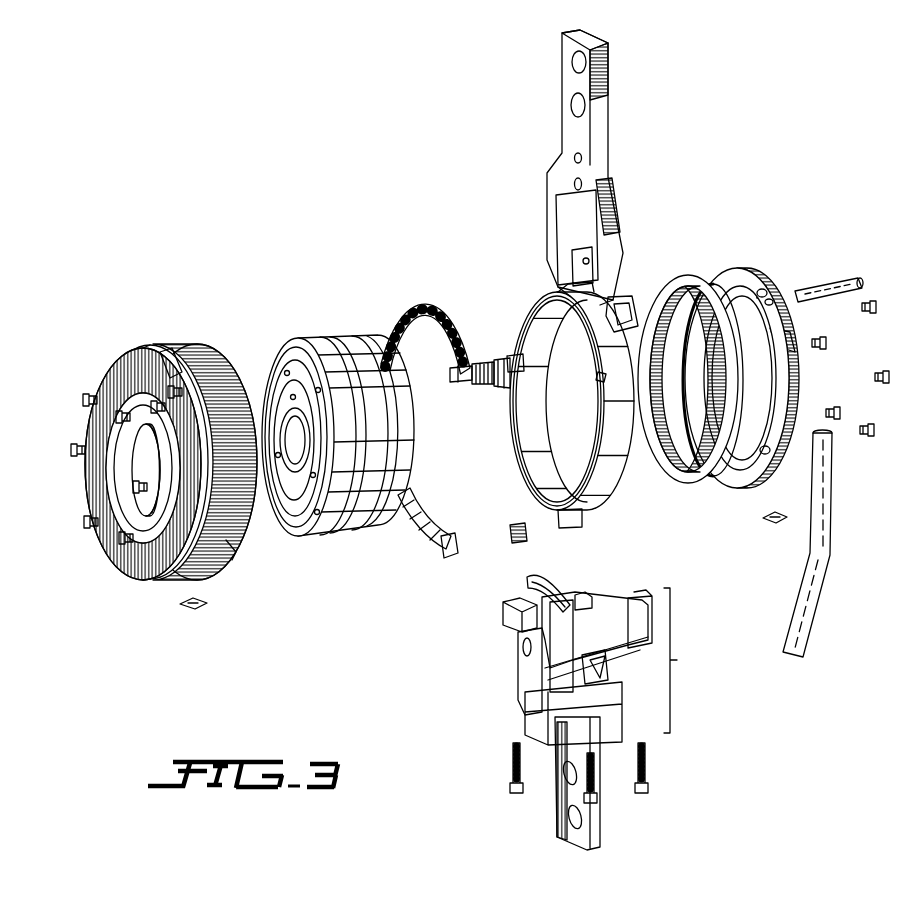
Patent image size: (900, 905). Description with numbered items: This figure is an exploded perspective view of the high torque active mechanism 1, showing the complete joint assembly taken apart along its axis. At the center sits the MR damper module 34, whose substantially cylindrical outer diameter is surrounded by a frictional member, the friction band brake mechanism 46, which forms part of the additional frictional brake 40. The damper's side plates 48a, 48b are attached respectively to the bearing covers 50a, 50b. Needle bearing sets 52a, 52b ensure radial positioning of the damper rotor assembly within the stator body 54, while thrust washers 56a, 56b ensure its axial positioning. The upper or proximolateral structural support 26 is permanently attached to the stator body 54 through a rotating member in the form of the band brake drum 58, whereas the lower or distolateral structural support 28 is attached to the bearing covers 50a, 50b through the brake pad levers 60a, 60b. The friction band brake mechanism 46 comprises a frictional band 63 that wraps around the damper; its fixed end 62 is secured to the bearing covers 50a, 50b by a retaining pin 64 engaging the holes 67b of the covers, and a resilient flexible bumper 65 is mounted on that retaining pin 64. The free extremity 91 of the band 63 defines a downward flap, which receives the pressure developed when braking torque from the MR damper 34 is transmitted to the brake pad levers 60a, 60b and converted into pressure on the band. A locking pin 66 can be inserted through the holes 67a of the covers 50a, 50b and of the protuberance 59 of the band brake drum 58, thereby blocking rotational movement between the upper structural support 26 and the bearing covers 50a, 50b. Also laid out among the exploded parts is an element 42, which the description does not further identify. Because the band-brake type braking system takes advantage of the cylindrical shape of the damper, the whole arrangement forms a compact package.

The archery sight assembly 1 is at (812, 172).
The upper or proximolateral structural support 26 is at (602, 148).
The lower or distolateral structural support 28 is at (602, 822).
The MR damper module 34 is at (354, 438).
The additional frictional brake 40 is at (577, 651).
The pin 42 is at (826, 565).
The friction band brake mechanism 46 is at (446, 360).
The side plate 48a is at (310, 520).
The side plate 48b is at (398, 540).
The bearing cover 50a is at (140, 350).
The bearing cover 50b is at (742, 266).
The needle bearing set 52a is at (218, 350).
The needle bearing set 52b is at (655, 275).
The stator body 54 is at (360, 515).
The thrust washer 56a is at (165, 348).
The thrust washer 56b is at (697, 275).
The band brake drum 58 is at (594, 391).
The protuberance 59 is at (620, 302).
The brake pad lever 60a is at (516, 630).
The brake pad lever 60b is at (584, 600).
The fixed end 62 is at (484, 386).
The frictional band 63 is at (422, 306).
The retaining pin 64 is at (466, 380).
The resilient flexible bumper 65 is at (500, 360).
The locking pin 66 is at (848, 288).
The holes 67a is at (178, 392).
The holes 67b is at (133, 404).
The free extremity 91 is at (456, 543).